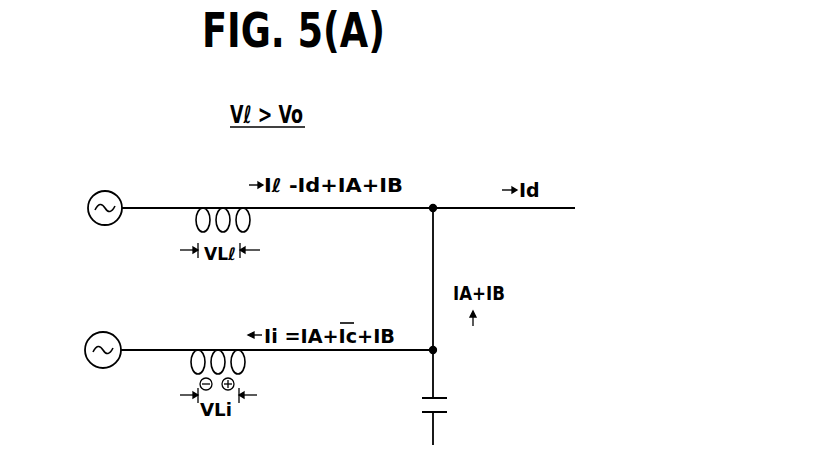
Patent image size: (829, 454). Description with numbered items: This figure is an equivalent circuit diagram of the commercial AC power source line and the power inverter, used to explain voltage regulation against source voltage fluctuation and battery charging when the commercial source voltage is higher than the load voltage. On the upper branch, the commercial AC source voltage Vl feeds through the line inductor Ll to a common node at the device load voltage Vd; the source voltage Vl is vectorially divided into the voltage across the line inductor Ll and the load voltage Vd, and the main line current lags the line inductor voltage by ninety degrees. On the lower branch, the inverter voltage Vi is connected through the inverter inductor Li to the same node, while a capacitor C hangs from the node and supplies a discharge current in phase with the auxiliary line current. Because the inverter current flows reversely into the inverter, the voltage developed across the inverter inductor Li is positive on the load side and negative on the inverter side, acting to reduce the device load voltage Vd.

The commercial AC source voltage Vl is at (105, 195).
The line inductor Ll is at (223, 203).
The device load voltage Vd is at (433, 203).
The inverter voltage Vi is at (103, 337).
The inverter inductor Li is at (218, 346).
The capacitor C is at (472, 386).